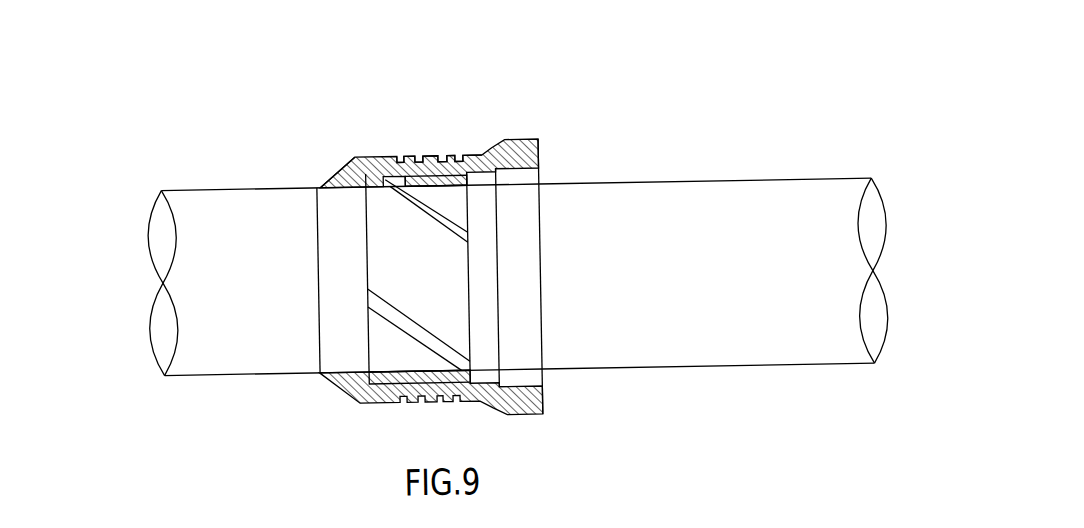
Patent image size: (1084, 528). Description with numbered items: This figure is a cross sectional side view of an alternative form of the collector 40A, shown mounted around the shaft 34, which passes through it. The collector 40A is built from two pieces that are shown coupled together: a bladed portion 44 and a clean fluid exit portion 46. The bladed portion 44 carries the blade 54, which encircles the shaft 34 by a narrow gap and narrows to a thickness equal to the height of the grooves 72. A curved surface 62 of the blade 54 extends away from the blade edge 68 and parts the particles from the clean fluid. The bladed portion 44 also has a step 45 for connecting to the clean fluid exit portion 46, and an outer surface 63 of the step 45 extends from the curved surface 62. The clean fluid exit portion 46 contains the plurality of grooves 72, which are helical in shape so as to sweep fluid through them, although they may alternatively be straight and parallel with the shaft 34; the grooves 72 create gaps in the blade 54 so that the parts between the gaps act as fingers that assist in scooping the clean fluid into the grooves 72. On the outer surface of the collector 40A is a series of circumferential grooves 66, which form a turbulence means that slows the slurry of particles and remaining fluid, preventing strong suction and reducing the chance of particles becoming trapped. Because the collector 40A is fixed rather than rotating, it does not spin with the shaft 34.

The collector 40A is at (120, 250).
The shaft 34 is at (605, 288).
The bladed portion 44 is at (359, 172).
The step 45 is at (375, 400).
The clean fluid exit portion 46 is at (542, 150).
The blade 54 is at (321, 181).
The curved surface 62 is at (341, 385).
The outer surface of the step 63 is at (369, 167).
The circumferential grooves 66 is at (439, 144).
The blade edge 68 is at (318, 292).
The grooves 72 is at (402, 325).